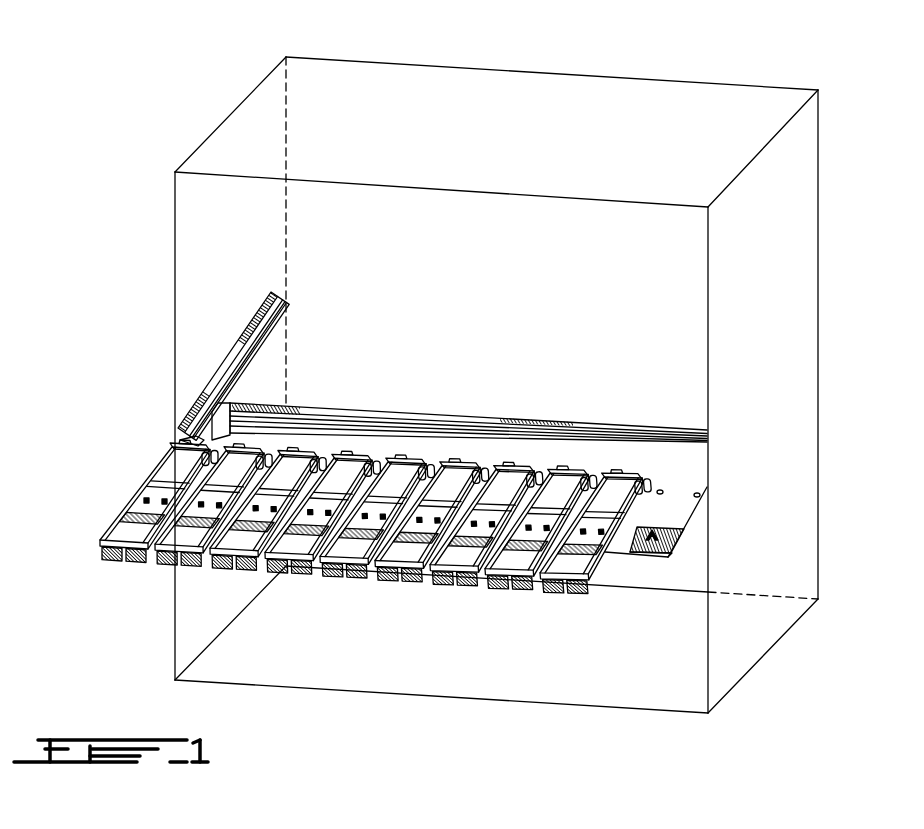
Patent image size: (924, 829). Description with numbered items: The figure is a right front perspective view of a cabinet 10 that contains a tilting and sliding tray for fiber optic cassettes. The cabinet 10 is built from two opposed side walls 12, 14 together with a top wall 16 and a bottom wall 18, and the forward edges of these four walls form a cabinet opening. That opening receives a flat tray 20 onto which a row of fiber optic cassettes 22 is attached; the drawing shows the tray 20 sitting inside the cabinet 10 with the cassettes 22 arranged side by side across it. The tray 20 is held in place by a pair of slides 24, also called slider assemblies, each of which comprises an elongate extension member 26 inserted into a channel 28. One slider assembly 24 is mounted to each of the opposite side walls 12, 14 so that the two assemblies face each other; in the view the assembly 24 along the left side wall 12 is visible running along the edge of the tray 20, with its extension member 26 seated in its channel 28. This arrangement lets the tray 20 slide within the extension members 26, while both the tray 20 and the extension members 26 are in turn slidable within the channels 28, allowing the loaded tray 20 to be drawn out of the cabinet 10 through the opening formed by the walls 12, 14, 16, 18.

The cabinet 10 is at (136, 117).
The side wall 12 is at (207, 265).
The side wall 14 is at (775, 238).
The top wall 16 is at (550, 115).
The bottom wall 18 is at (456, 655).
The flat tray 20 is at (648, 455).
The fiber optic cassettes 22 is at (223, 560).
The slide 24 is at (240, 311).
The elongate extension member 26 is at (232, 395).
The channel 28 is at (243, 345).